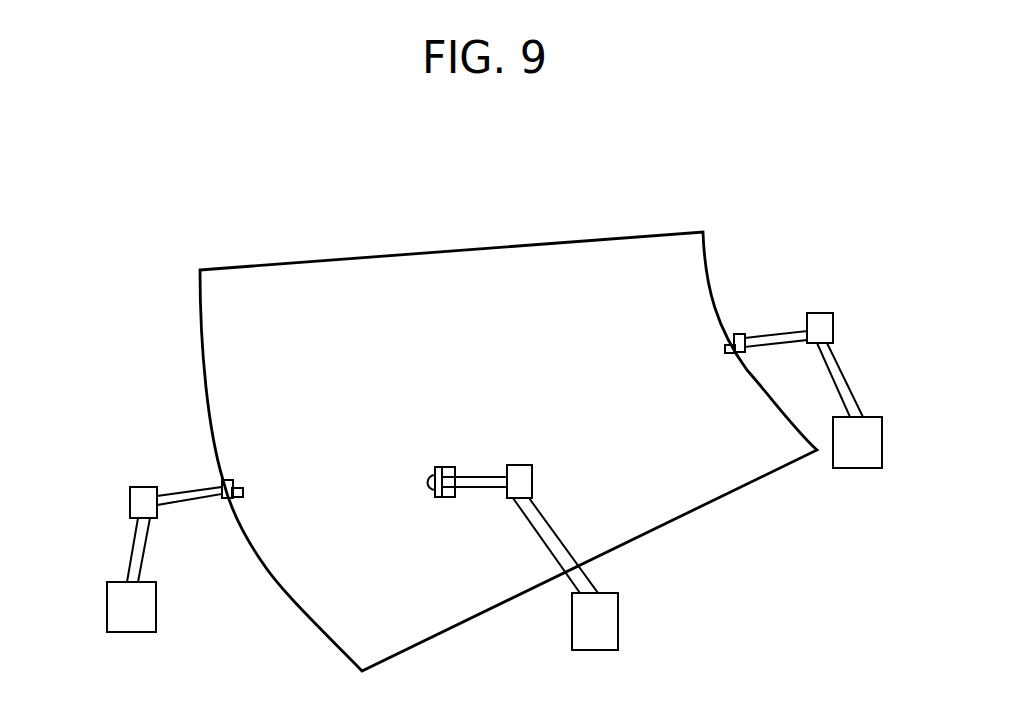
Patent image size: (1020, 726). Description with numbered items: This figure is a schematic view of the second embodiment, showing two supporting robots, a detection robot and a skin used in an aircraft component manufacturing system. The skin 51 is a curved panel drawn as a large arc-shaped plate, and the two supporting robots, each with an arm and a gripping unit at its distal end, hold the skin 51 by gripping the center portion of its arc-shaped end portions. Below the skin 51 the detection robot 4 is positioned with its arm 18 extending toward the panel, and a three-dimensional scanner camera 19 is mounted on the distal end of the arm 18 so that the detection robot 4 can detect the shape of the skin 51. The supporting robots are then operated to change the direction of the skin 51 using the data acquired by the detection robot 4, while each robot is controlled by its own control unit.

The skin 51 is at (511, 246).
The 3D scanner camera 19 is at (440, 467).
The arm 18 is at (557, 527).
The detection robot 4 is at (618, 620).